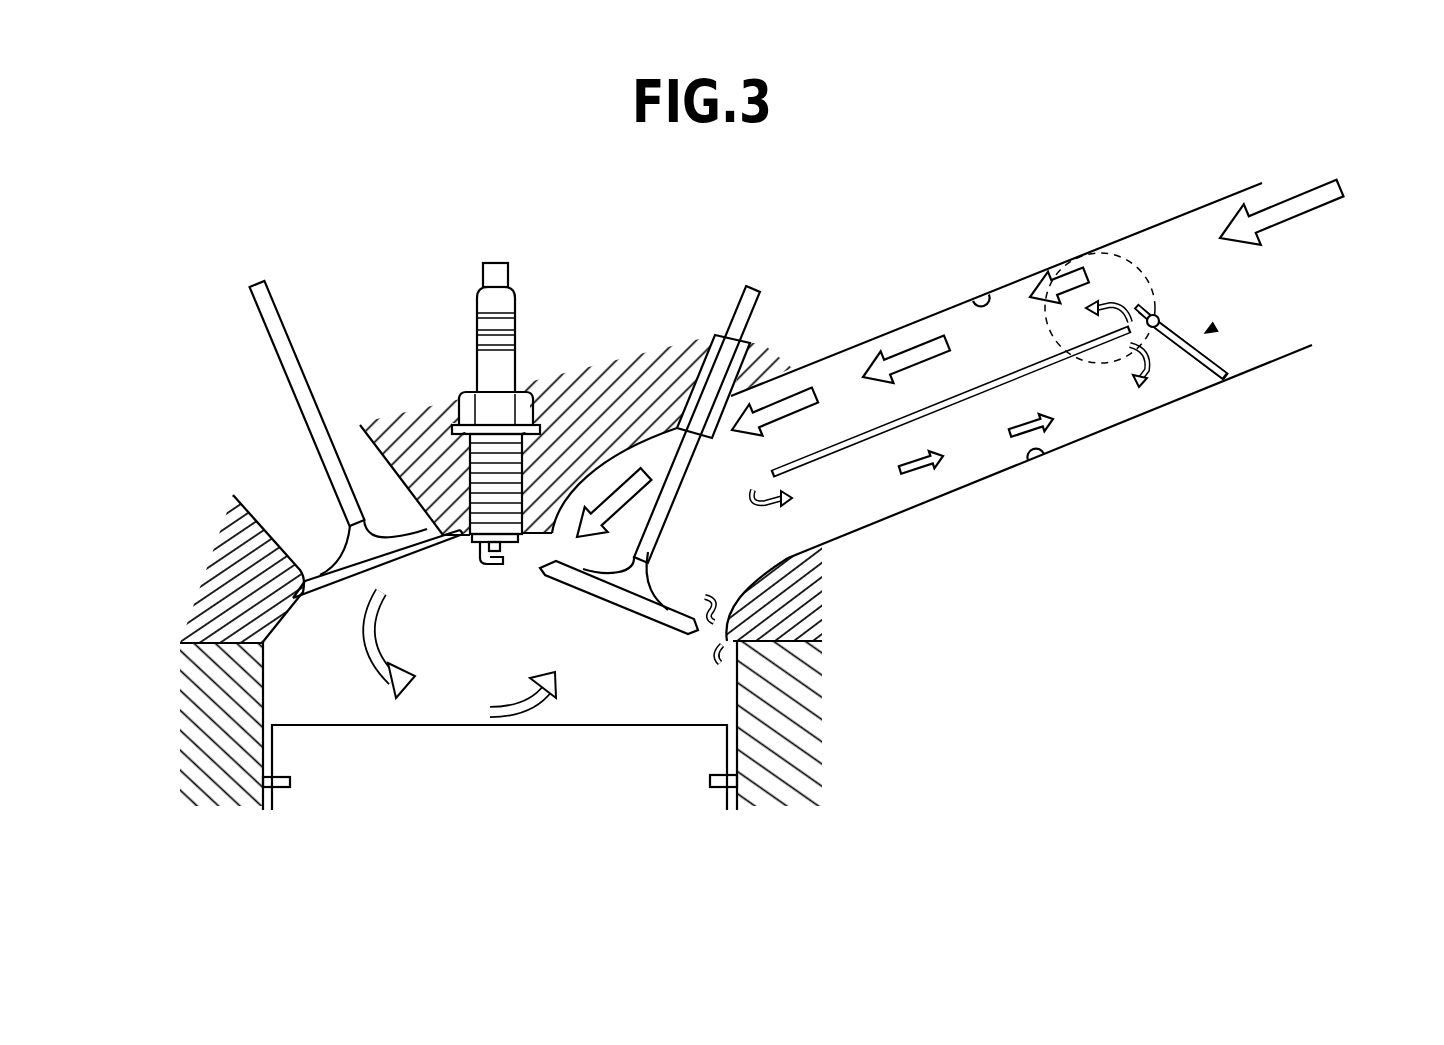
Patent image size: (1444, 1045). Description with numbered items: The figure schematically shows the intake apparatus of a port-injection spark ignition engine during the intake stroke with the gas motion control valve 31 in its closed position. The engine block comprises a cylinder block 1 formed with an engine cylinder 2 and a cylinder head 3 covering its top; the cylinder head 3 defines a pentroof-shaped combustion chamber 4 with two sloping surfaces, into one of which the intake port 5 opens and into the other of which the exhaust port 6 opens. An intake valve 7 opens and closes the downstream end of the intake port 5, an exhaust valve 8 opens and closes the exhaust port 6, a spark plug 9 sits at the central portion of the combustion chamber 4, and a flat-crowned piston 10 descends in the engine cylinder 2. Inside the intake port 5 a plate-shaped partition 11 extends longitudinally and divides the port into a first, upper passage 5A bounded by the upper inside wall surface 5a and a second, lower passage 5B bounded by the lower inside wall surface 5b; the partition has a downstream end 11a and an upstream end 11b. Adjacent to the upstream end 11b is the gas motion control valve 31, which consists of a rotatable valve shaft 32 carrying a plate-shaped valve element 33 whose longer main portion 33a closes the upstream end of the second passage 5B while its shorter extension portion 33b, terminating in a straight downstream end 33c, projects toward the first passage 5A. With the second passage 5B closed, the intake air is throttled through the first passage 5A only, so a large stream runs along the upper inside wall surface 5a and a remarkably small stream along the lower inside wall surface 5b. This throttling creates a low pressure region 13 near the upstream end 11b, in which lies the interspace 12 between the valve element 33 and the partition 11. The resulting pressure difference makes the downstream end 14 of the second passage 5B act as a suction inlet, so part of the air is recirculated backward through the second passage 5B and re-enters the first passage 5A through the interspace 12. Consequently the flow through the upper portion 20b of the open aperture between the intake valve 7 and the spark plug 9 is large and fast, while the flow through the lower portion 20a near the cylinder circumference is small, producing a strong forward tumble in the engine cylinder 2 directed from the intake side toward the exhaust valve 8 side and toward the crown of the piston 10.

The cylinder block 1 is at (222, 743).
The engine cylinder 2 is at (277, 671).
The cylinder head 3 is at (233, 578).
The combustion chamber 4 is at (438, 637).
The intake port 5 is at (962, 318).
The first passage 5A is at (847, 390).
The second passage 5B is at (930, 487).
The upper inside wall surface 5a is at (981, 297).
The lower inside wall surface 5b is at (1040, 463).
The exhaust port 6 is at (373, 467).
The intake valve 7 is at (628, 600).
The exhaust valve 8 is at (303, 410).
The spark plug 9 is at (492, 568).
The piston 10 is at (710, 749).
The partition 11 is at (958, 410).
The downstream end of partition plate 11a is at (777, 477).
The upstream end of partition 11b is at (1130, 347).
The interspace 12 is at (1197, 350).
The low pressure region 13 is at (1046, 332).
The downstream end of second passage 14 is at (783, 523).
The lower portion of open aperture 20a is at (720, 630).
The upper portion of open aperture 20b is at (552, 547).
The gas motion control valve 31 is at (1212, 330).
The valve shaft 32 is at (1160, 315).
The valve element 33 is at (1280, 344).
The main portion 33a is at (1220, 360).
The extension portion 33b is at (1142, 303).
The downstream end of valve element 33c is at (1130, 303).